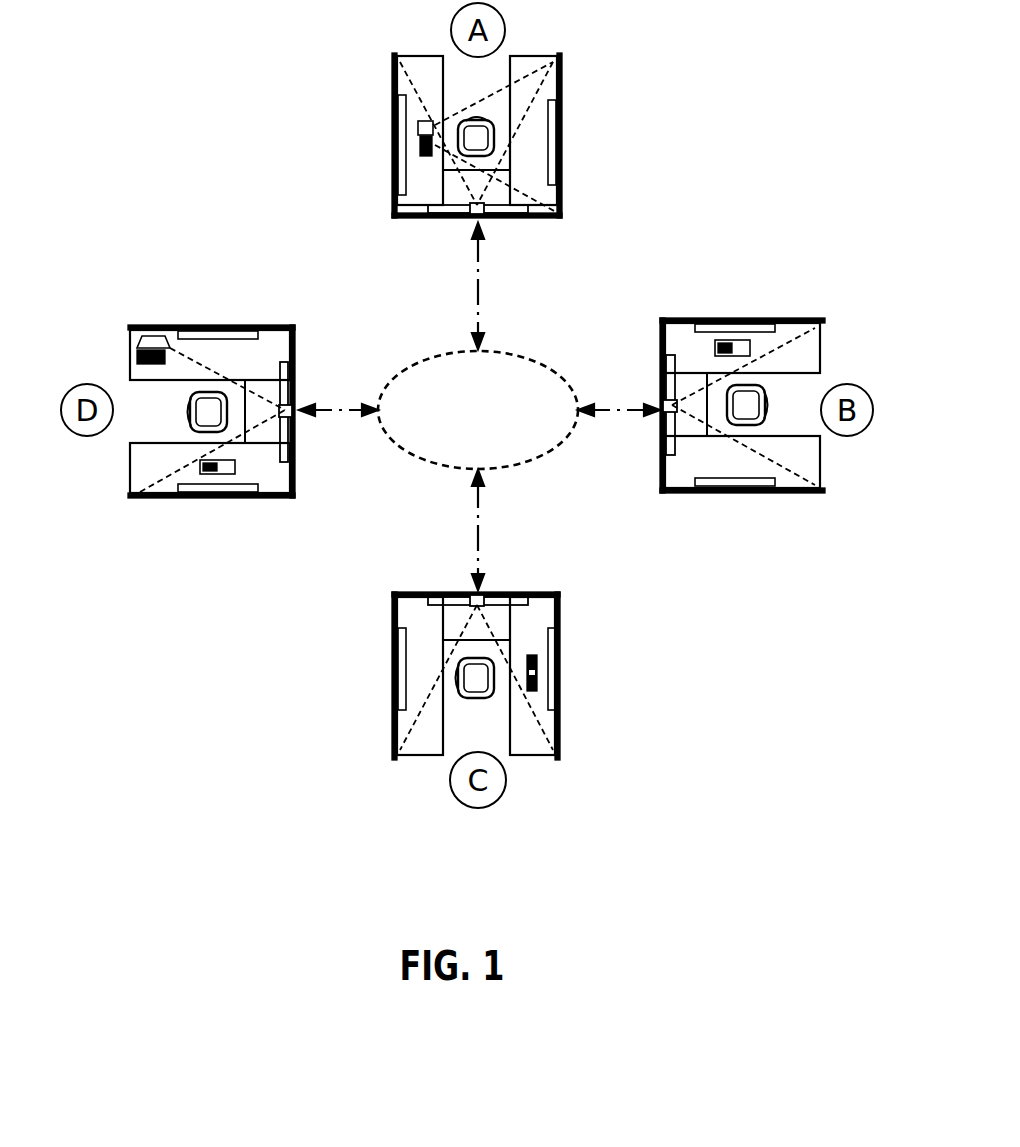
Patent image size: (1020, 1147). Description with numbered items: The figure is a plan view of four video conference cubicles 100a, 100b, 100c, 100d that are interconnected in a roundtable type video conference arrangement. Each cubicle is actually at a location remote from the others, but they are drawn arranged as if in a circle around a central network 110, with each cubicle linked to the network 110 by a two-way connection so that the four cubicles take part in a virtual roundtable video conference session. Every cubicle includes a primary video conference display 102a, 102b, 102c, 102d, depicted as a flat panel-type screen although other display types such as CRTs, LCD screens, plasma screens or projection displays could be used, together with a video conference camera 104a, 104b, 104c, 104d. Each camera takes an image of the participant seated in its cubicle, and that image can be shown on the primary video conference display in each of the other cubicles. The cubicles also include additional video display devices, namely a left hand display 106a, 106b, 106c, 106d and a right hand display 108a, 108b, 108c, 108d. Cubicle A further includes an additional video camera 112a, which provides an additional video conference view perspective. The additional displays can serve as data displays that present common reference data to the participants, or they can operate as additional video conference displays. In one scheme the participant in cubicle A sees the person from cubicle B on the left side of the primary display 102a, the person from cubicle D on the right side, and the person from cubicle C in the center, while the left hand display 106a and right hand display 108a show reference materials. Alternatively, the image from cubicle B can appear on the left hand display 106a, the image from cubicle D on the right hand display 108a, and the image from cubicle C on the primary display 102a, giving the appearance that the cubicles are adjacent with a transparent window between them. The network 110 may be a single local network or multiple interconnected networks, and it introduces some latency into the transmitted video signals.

The video conference cubicle 100a is at (476, 156).
The video conference cubicle 100b is at (682, 400).
The video conference cubicle 100c is at (477, 658).
The video conference cubicle 100d is at (242, 412).
The primary video conference display 102a is at (562, 208).
The primary video conference display 102b is at (658, 355).
The primary video conference display 102c is at (393, 600).
The primary video conference display 102d is at (297, 355).
The video conference camera 104a is at (482, 216).
The video conference camera 104b is at (658, 432).
The video conference camera 104c is at (485, 598).
The video conference camera 104d is at (297, 432).
The left hand display 106a is at (556, 140).
The left hand display 106b is at (728, 493).
The left hand display 106c is at (393, 672).
The left hand display 106d is at (253, 328).
The right hand display 108a is at (392, 122).
The right hand display 108b is at (745, 320).
The right hand display 108c is at (560, 670).
The right hand display 108d is at (222, 495).
The network 110 is at (512, 370).
The additional video camera 112a is at (412, 142).